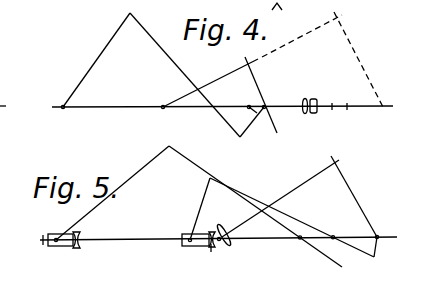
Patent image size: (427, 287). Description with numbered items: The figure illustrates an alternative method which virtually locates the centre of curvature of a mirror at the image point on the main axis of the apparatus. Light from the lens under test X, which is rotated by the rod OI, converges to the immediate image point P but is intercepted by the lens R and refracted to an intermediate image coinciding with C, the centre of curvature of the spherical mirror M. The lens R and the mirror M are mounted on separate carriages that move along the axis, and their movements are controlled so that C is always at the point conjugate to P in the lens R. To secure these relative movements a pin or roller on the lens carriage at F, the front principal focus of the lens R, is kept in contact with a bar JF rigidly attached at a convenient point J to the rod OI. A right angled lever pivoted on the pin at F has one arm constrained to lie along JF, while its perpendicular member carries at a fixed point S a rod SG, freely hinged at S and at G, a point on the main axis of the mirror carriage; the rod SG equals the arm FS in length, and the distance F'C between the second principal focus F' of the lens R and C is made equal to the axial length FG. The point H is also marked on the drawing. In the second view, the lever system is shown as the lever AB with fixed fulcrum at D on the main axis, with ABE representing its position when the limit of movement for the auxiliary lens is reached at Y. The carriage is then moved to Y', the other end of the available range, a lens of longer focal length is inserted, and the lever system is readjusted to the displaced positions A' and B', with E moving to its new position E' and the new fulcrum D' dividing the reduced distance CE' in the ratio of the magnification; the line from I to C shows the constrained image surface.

In FIG. 4, the lever arm end A is at (151, 75).
In FIG. 5, the lever arm end A is at (199, 199).
In FIG. 5, the displaced lever end A' is at (282, 217).
In FIG. 4, the lever system point E is at (62, 116).
In FIG. 5, the lever system point E is at (64, 247).
In FIG. 5, the new position of E E' is at (198, 248).
In FIG. 4, the rod pivot point O is at (249, 71).
In FIG. 4, the fulcrum D is at (208, 117).
In FIG. 5, the fulcrum D is at (297, 247).
In FIG. 5, the readjusted fulcrum D' is at (338, 228).
In FIG. 4, the attachment point of bar J is at (261, 89).
In FIG. 4, the mirror carriage axis point G is at (247, 100).
In FIG. 4, the front principal focus of lens R F is at (269, 98).
In FIG. 4, the second principal focus of lens R F' is at (348, 97).
In FIG. 4, the pin on lever S is at (253, 122).
In FIG. 4, the lower apex of triangle H is at (243, 145).
In FIG. 4, the lens R is at (299, 97).
In FIG. 4, the spherical mirror M is at (312, 94).
In FIG. 4, the centre of curvature of the mirror C is at (329, 100).
In FIG. 5, the centre of curvature of the mirror C is at (383, 237).
In FIG. 4, the immediate image point P is at (359, 70).
In FIG. 5, the limit of movement Y is at (38, 248).
In FIG. 5, the other end of available range Y' is at (217, 255).
In FIG. 5, the lens under test X is at (277, 209).
In FIG. 5, the rod end point I is at (354, 196).
In FIG. 5, the lever arm end B is at (343, 275).
In FIG. 5, the displaced lever end B' is at (381, 262).